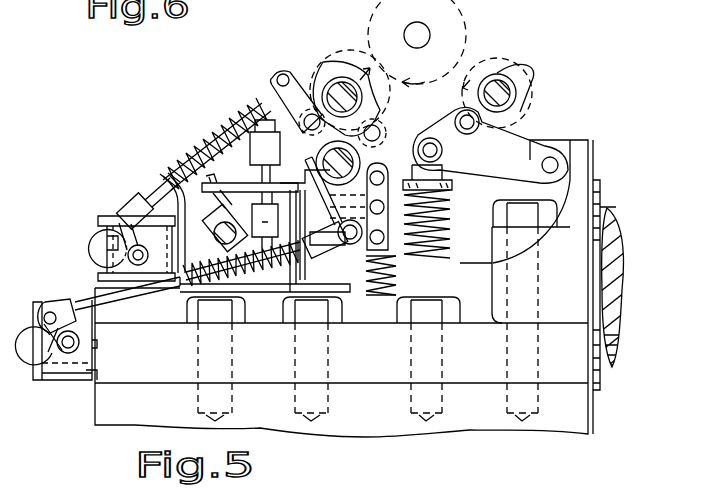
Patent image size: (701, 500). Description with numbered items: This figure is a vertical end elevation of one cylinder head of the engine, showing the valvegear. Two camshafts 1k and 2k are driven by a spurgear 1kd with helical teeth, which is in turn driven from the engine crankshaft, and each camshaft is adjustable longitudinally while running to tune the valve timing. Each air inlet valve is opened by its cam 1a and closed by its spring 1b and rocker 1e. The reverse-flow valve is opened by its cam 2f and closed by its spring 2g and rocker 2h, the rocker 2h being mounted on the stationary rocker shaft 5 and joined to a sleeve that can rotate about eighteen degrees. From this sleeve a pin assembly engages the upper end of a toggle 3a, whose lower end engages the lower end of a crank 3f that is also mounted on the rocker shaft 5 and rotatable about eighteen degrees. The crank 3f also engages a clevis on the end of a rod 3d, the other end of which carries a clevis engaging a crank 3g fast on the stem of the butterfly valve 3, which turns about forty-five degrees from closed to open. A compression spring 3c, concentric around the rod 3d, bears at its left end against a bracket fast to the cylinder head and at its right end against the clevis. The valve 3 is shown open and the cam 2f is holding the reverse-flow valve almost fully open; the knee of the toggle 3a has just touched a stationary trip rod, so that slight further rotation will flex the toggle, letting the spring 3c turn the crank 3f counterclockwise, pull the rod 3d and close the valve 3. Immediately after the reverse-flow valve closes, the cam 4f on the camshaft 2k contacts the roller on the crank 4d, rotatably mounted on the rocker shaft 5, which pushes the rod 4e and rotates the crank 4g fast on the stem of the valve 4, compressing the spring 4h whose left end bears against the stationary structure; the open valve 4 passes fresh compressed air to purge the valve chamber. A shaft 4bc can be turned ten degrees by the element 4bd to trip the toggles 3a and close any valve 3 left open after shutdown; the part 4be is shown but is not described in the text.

The spurgear 1kd is at (462, 45).
The camshaft 1k is at (500, 78).
The cam 1a is at (523, 90).
The rocker 1e is at (488, 168).
The spring 1b is at (455, 200).
The camshaft 2k is at (341, 82).
The cam 2f is at (357, 110).
The rocker 2h is at (386, 140).
The spring 2g is at (378, 288).
The valve 3 is at (50, 380).
The toggle 3a is at (397, 258).
The compression spring 3c is at (270, 266).
The rod 3d is at (143, 293).
The crank 3f is at (337, 243).
The crank 3g is at (65, 298).
The valve 4 is at (112, 247).
The crank 4d is at (272, 85).
The rod 4e is at (165, 189).
The cam 4f is at (327, 72).
The crank 4g is at (123, 212).
The spring 4h is at (215, 135).
The shaft 4bc is at (216, 250).
The shaft turning element 4bd is at (214, 215).
The plate 4be is at (238, 184).
The stationary rocker shaft 5 is at (337, 165).